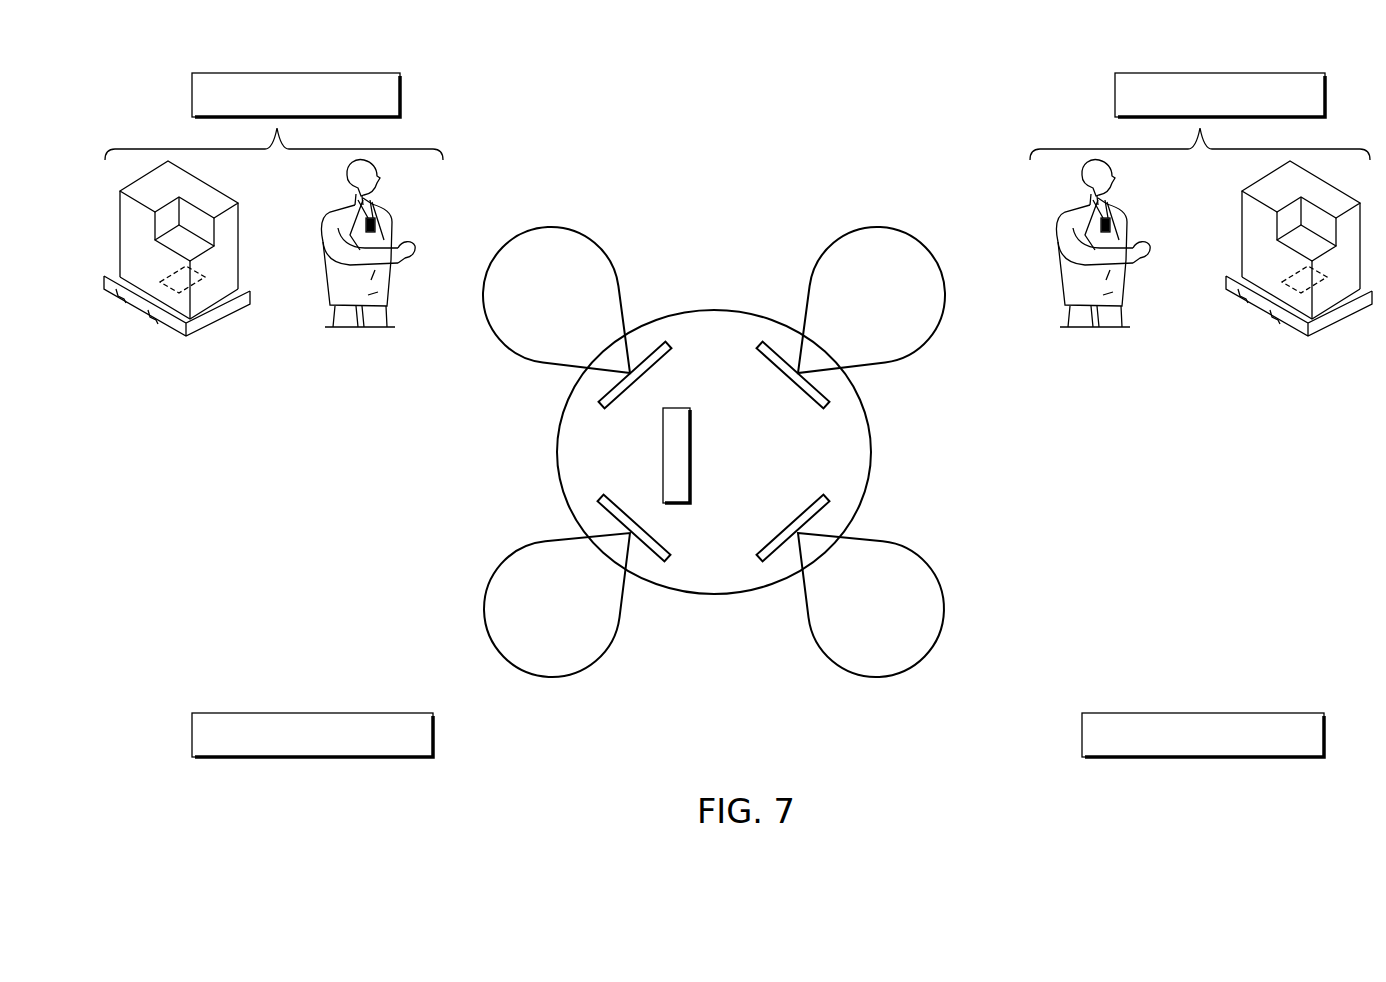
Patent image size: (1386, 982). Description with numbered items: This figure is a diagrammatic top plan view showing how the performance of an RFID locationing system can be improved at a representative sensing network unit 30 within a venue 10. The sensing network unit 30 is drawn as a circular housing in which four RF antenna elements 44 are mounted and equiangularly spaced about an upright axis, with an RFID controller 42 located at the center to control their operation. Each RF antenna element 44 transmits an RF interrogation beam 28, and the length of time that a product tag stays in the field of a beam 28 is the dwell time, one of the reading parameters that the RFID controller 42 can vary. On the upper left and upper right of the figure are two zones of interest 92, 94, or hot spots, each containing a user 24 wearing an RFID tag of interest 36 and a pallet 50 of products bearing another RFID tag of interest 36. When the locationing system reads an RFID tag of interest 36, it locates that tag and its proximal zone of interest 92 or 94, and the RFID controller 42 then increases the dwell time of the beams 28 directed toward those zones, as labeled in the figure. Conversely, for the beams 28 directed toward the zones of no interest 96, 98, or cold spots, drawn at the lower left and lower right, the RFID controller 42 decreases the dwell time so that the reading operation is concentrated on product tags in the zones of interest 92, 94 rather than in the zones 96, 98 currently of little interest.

The venue 10 is at (716, 240).
The user 24 is at (332, 278).
The RF interrogation beam 28 is at (963, 587).
The sensing network unit 30 is at (545, 442).
The RFID tag of interest 36 is at (153, 280).
The RFID controller 42 is at (663, 455).
The RF antenna element 44 is at (884, 514).
The pallet 50 is at (205, 326).
The zone of interest 92 is at (192, 97).
The zone of interest 94 is at (1115, 97).
The zone of no interest 96 is at (192, 737).
The zone of no interest 98 is at (1082, 737).